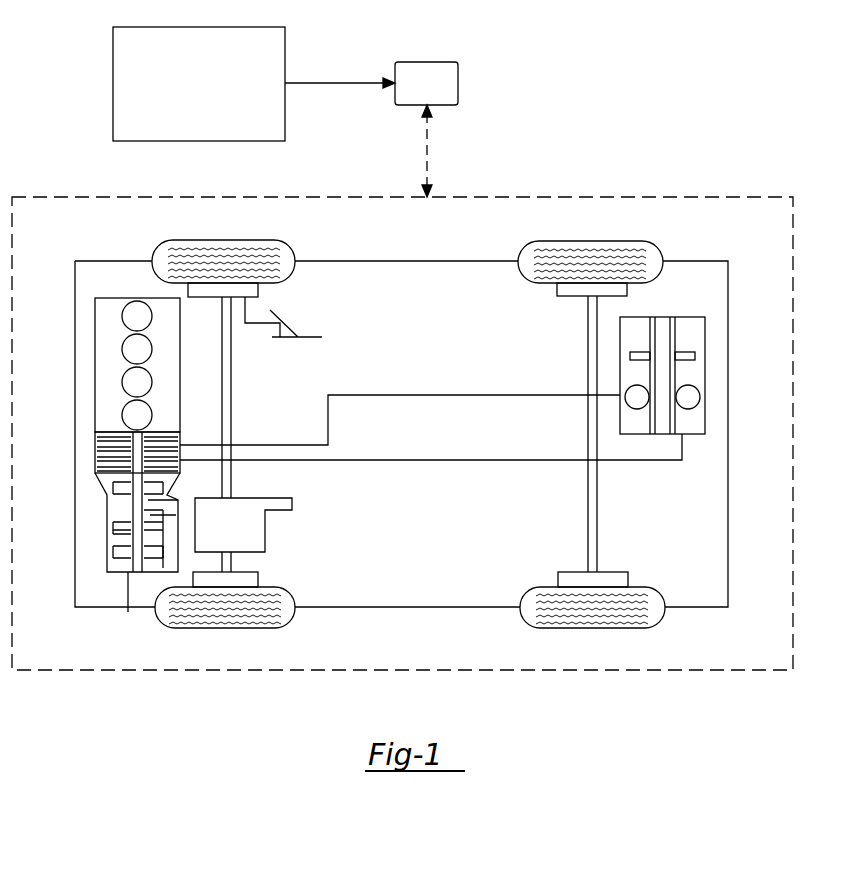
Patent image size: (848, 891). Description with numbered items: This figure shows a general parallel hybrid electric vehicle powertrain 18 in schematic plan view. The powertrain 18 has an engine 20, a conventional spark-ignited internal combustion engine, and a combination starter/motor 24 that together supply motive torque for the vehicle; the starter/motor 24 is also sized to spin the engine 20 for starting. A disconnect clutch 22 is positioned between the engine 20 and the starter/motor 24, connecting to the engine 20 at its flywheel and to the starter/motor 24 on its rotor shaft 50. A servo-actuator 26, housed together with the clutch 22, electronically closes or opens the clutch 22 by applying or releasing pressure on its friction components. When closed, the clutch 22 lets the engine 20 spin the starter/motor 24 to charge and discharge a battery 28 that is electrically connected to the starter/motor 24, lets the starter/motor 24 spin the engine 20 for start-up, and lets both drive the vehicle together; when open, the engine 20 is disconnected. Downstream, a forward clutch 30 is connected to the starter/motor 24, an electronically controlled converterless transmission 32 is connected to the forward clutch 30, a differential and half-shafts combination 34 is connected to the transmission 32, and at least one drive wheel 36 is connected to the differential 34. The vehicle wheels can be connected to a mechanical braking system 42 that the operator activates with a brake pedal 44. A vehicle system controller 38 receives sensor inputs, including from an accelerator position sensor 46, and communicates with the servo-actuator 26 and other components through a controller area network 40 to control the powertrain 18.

The powertrain 18 is at (390, 182).
The engine 20 is at (95, 345).
The disconnect clutch 22 is at (107, 441).
The starter/motor 24 is at (110, 455).
The servo-actuator 26 is at (178, 431).
The battery 28 is at (705, 370).
The forward clutch 30 is at (95, 487).
The electronically controlled converterless transmission 32 is at (128, 612).
The differential and half-shafts combination 34 is at (266, 522).
The drive wheel 36 is at (192, 628).
The vehicle system controller 38 is at (395, 68).
The controller area network 40 is at (70, 197).
The mechanical braking system 42 is at (258, 289).
The brake pedal 44 is at (253, 323).
The accelerator position sensor 46 is at (113, 56).
The rotor shaft 50 is at (128, 528).